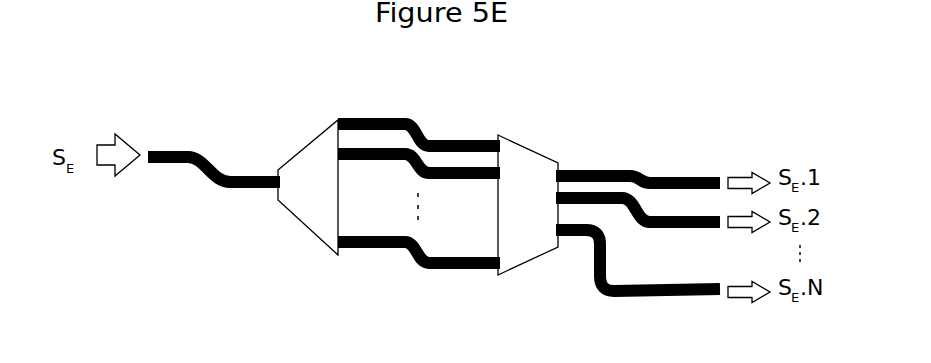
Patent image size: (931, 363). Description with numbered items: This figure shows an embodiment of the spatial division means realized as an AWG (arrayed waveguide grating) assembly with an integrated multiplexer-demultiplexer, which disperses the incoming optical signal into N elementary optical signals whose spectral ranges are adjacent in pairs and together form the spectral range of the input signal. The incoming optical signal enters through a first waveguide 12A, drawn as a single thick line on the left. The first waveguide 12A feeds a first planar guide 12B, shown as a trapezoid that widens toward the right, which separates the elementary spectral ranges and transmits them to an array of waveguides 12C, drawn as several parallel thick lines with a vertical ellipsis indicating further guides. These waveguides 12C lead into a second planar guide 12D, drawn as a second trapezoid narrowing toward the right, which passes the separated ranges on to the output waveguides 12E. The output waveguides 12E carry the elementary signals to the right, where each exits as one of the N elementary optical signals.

The first waveguide 12A is at (240, 187).
The first planar guide 12B is at (312, 153).
The waveguides 12C is at (387, 119).
The second planar guide 12D is at (530, 166).
The waveguides 12E is at (615, 171).